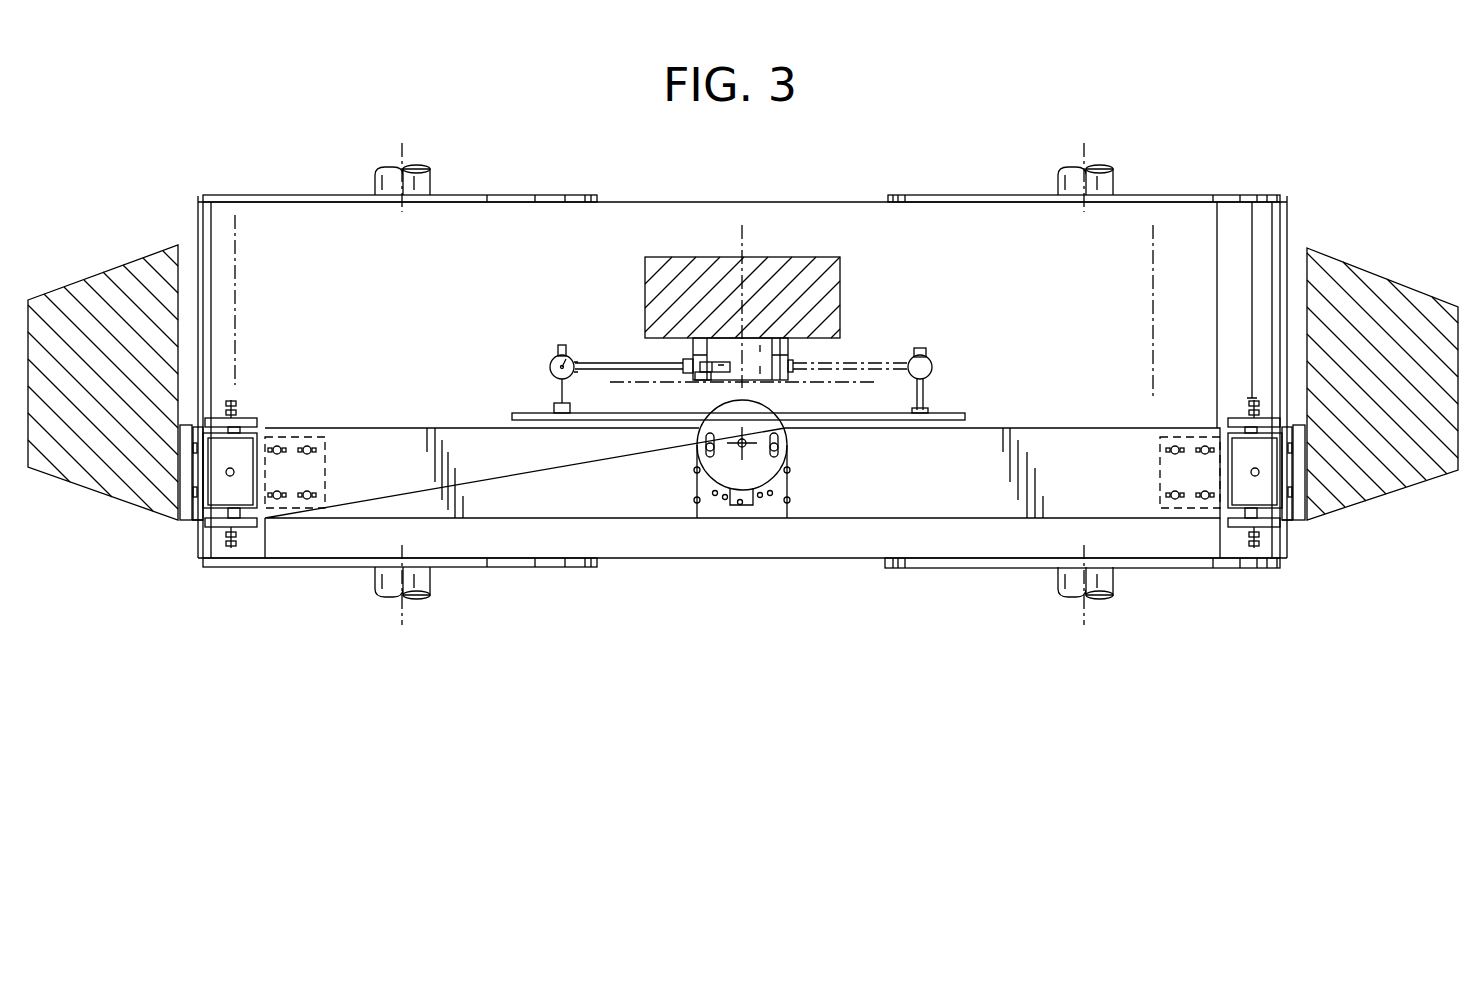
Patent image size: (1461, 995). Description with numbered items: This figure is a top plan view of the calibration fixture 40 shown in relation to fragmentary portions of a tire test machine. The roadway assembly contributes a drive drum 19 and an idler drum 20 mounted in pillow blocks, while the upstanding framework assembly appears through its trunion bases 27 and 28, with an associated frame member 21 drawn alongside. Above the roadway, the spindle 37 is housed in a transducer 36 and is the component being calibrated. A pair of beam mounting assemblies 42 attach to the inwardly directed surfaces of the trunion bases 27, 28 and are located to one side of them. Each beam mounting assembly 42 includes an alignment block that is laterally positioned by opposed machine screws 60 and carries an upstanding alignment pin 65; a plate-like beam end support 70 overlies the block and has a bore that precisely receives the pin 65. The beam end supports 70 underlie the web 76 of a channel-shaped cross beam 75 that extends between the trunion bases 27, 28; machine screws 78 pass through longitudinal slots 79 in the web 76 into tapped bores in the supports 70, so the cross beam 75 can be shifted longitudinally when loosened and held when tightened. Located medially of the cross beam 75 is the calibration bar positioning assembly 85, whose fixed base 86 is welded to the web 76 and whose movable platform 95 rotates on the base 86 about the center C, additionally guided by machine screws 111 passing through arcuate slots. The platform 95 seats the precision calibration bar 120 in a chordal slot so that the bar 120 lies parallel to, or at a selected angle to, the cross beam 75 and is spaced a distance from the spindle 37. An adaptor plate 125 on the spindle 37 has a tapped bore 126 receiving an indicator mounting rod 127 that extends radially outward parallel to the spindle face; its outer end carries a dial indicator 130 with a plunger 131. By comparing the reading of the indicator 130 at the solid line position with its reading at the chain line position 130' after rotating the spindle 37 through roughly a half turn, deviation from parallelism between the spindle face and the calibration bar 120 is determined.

The drive drum 19 is at (508, 567).
The idler drum 20 is at (992, 570).
The upper frame rail 21 is at (967, 232).
The trunion base 27 is at (100, 292).
The trunion base 28 is at (1395, 312).
The transducer 36 is at (788, 258).
The spindle 37 is at (708, 340).
The calibration fixture 40 is at (840, 522).
The beam mounting assembly 42 is at (192, 522).
The machine screw 60 is at (235, 548).
The alignment pin 65 is at (233, 470).
The beam end support 70 is at (238, 450).
The cross beam 75 is at (1060, 422).
The web 76 is at (383, 450).
The machine screw 78 is at (305, 497).
The longitudinal slot 79 is at (1172, 445).
The calibration bar positioning assembly 85 is at (718, 520).
The fixed base 86 is at (775, 518).
The movable platform 95 is at (762, 472).
The machine screw 111 is at (783, 450).
The calibration bar 120 is at (950, 416).
The adaptor plate 125 is at (724, 365).
The tapped bore 126 is at (703, 378).
The indicator mounting rod 127 is at (605, 362).
The dial indicator 130 is at (509, 337).
The chain line position of dial indicator 130' is at (831, 352).
The plunger 131 is at (558, 422).
The center C is at (738, 447).